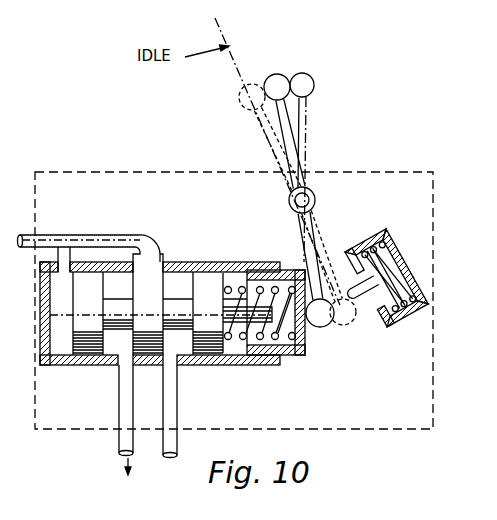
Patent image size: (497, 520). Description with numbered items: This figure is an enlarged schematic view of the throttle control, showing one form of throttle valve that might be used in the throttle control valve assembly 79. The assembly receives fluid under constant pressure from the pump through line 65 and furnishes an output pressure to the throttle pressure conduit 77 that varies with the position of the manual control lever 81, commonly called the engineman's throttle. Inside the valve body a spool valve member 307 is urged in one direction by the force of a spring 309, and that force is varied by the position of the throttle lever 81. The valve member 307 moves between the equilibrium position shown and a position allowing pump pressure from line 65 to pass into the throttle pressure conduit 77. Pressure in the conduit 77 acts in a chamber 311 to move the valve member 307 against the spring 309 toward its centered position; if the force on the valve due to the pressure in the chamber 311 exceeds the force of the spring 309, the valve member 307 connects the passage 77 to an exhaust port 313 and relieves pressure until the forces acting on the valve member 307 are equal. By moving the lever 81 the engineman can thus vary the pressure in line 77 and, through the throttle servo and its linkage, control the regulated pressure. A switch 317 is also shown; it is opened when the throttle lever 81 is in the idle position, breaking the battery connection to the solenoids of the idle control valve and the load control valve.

The line 65 is at (177, 395).
The throttle pressure conduit 77 is at (104, 240).
The throttle control valve assembly 79 is at (397, 172).
The manual control lever 81 is at (266, 78).
The spool valve member 307 is at (158, 288).
The spring 309 is at (306, 347).
The chamber 311 is at (62, 343).
The exhaust port 313 is at (127, 400).
The switch 317 is at (378, 230).